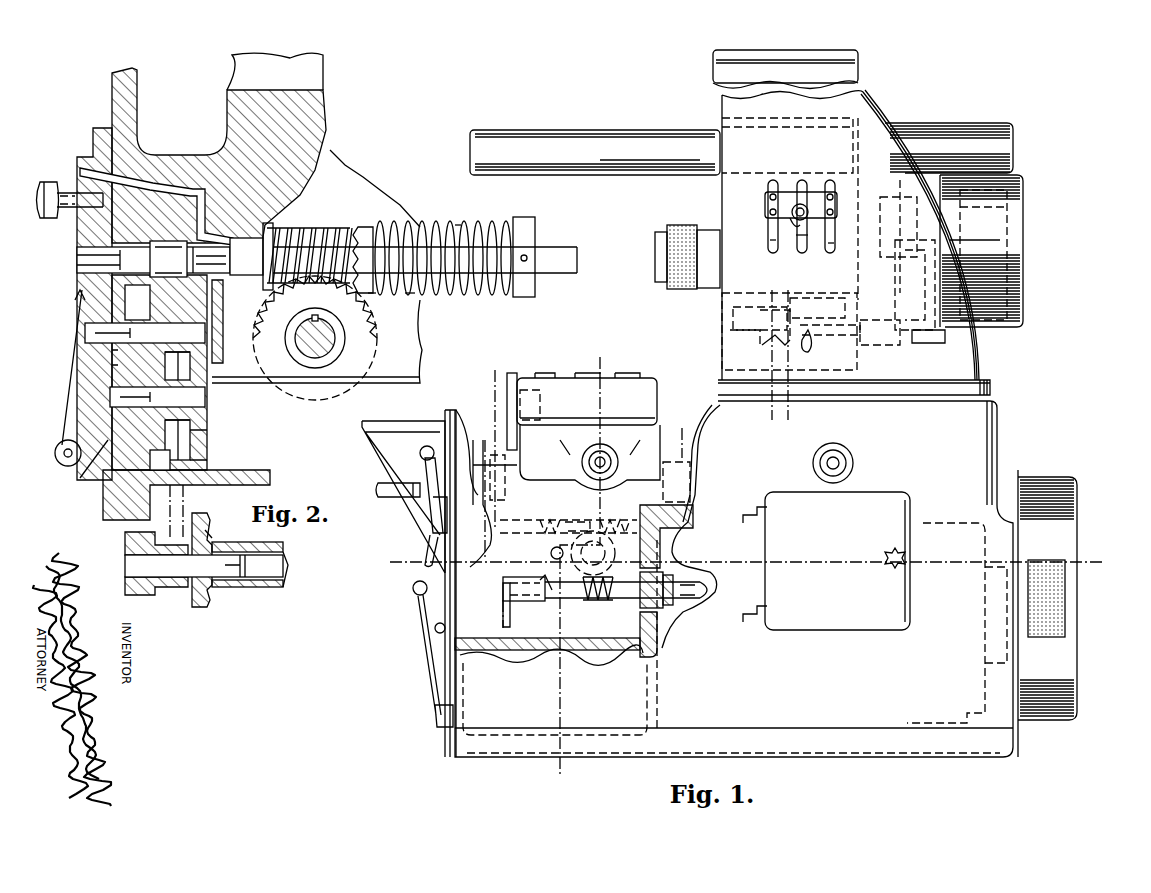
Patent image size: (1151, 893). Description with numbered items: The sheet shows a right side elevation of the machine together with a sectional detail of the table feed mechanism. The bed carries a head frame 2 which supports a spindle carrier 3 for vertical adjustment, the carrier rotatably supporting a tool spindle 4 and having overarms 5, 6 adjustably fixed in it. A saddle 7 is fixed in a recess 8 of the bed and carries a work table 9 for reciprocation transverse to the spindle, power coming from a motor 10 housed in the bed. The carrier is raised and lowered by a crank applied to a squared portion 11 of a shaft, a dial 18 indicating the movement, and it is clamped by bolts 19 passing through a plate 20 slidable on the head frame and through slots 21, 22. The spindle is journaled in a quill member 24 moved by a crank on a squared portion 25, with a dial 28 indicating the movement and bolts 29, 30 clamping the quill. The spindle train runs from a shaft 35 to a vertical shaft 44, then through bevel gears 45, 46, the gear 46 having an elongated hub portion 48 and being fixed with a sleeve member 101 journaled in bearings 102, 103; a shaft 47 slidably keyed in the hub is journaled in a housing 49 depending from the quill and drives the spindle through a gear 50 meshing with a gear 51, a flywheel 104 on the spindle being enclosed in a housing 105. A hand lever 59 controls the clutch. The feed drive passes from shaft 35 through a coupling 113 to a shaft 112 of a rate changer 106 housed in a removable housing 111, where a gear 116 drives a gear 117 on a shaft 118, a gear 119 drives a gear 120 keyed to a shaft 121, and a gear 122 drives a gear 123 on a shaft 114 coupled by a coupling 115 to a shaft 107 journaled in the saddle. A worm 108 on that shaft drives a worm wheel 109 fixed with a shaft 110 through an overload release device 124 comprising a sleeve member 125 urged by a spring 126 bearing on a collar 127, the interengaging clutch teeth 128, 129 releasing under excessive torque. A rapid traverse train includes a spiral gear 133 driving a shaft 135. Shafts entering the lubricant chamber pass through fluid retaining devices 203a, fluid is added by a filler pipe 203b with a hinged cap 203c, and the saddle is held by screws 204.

In FIG. 1, the head frame 2 is at (1008, 378).
In FIG. 1, the spindle carrier 3 is at (600, 357).
In FIG. 1, the tool spindle 4 is at (660, 276).
In FIG. 1, the overarm 5 is at (555, 132).
In FIG. 1, the overarm 6 is at (663, 460).
In FIG. 1, the saddle 7 is at (488, 449).
In FIG. 1, the recess 8 is at (502, 375).
In FIG. 1, the work table 9 is at (560, 375).
In FIG. 1, the motor 10 is at (973, 553).
In FIG. 1, the squared portion 11 is at (847, 450).
In FIG. 1, the dial 18 is at (855, 463).
In FIG. 1, the bolts 19 is at (768, 197).
In FIG. 1, the plate 20 is at (840, 212).
In FIG. 1, the slot 21 is at (770, 240).
In FIG. 1, the slot 22 is at (838, 243).
In FIG. 1, the quill member 24 is at (700, 290).
In FIG. 1, the squared portion 25 is at (805, 205).
In FIG. 1, the dial 28 is at (792, 238).
In FIG. 1, the bolt 29 is at (768, 212).
In FIG. 1, the bolt 30 is at (800, 222).
In FIG. 2, the shaft 35 is at (275, 584).
In FIG. 1, the shaft 35 is at (563, 590).
In FIG. 1, the vertical shaft 44 is at (785, 412).
In FIG. 1, the bevel gear 45 is at (765, 350).
In FIG. 1, the bevel gear 46 is at (830, 346).
In FIG. 1, the shaft 47 is at (895, 342).
In FIG. 1, the elongated hub portion 48 is at (848, 336).
In FIG. 1, the housing 49 is at (875, 360).
In FIG. 1, the gear 50 is at (948, 335).
In FIG. 1, the gear 51 is at (923, 263).
In FIG. 1, the hand lever 59 is at (430, 668).
In FIG. 1, the sleeve member 101 is at (768, 310).
In FIG. 1, the bearing 102 is at (730, 338).
In FIG. 1, the bearing 103 is at (846, 300).
In FIG. 1, the flywheel 104 is at (1000, 243).
In FIG. 1, the housing 105 is at (1025, 285).
In FIG. 2, the rate changer 106 is at (95, 300).
In FIG. 1, the rate changer 106 is at (457, 615).
In FIG. 2, the shaft 107 is at (238, 240).
In FIG. 2, the worm 108 is at (310, 226).
In FIG. 1, the worm 108 is at (555, 518).
In FIG. 2, the worm wheel 109 is at (262, 322).
In FIG. 1, the worm wheel 109 is at (547, 553).
In FIG. 2, the shaft 110 is at (300, 342).
In FIG. 1, the shaft 110 is at (532, 550).
In FIG. 2, the housing 111 is at (200, 440).
In FIG. 1, the housing 111 is at (512, 627).
In FIG. 2, the shaft 112 is at (205, 600).
In FIG. 2, the coupling 113 is at (255, 589).
In FIG. 1, the coupling 113 is at (520, 592).
In FIG. 2, the shaft 114 is at (172, 255).
In FIG. 2, the coupling 115 is at (245, 190).
In FIG. 1, the coupling 115 is at (506, 502).
In FIG. 2, the gear 116 is at (173, 594).
In FIG. 2, the gear 117 is at (192, 366).
In FIG. 2, the shaft 118 is at (200, 414).
In FIG. 2, the gear 119 is at (85, 409).
In FIG. 2, the gear 120 is at (92, 357).
In FIG. 2, the shaft 121 is at (85, 327).
In FIG. 2, the gear 122 is at (120, 310).
In FIG. 2, the gear 123 is at (95, 232).
In FIG. 2, the overload release device 124 is at (439, 208).
In FIG. 1, the overload release device 124 is at (615, 518).
In FIG. 2, the sleeve member 125 is at (412, 293).
In FIG. 2, the spring 126 is at (458, 222).
In FIG. 2, the collar 127 is at (521, 222).
In FIG. 2, the clutch teeth 128 is at (358, 228).
In FIG. 2, the clutch teeth 129 is at (373, 294).
In FIG. 1, the spiral gear 133 is at (592, 590).
In FIG. 1, the shaft 135 is at (607, 560).
In FIG. 2, the fluid retaining devices 203a is at (208, 545).
In FIG. 1, the fluid retaining devices 203a is at (670, 615).
In FIG. 1, the filler pipe 203b is at (428, 556).
In FIG. 1, the hinged cap 203c is at (430, 543).
In FIG. 1, the screws 204 is at (468, 425).